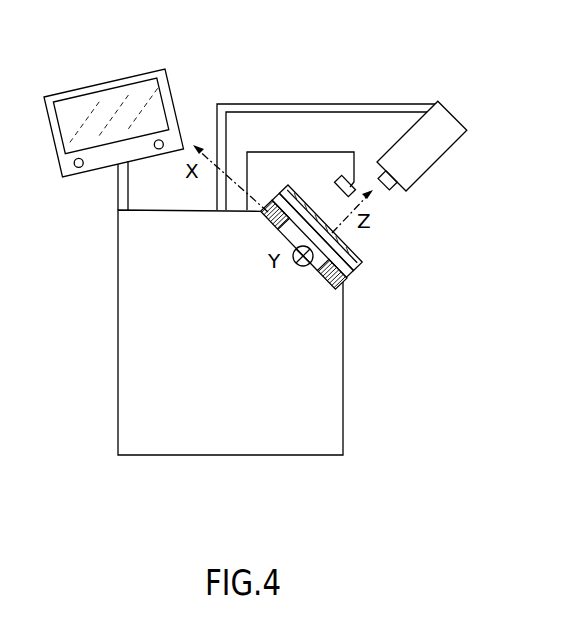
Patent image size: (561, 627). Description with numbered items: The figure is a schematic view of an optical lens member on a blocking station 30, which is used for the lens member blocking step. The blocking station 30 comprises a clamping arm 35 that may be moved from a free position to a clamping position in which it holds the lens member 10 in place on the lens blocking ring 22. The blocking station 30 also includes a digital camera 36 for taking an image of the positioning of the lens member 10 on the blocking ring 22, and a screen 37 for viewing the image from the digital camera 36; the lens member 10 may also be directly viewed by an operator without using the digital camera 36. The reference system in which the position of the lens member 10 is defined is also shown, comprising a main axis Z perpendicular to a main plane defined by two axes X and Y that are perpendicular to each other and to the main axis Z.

The lens member 10 is at (358, 259).
The lens blocking ring 22 is at (345, 283).
The blocking station 30 is at (266, 76).
The clamping arm 35 is at (330, 152).
The digital camera 36 is at (442, 140).
The screen 37 is at (102, 110).